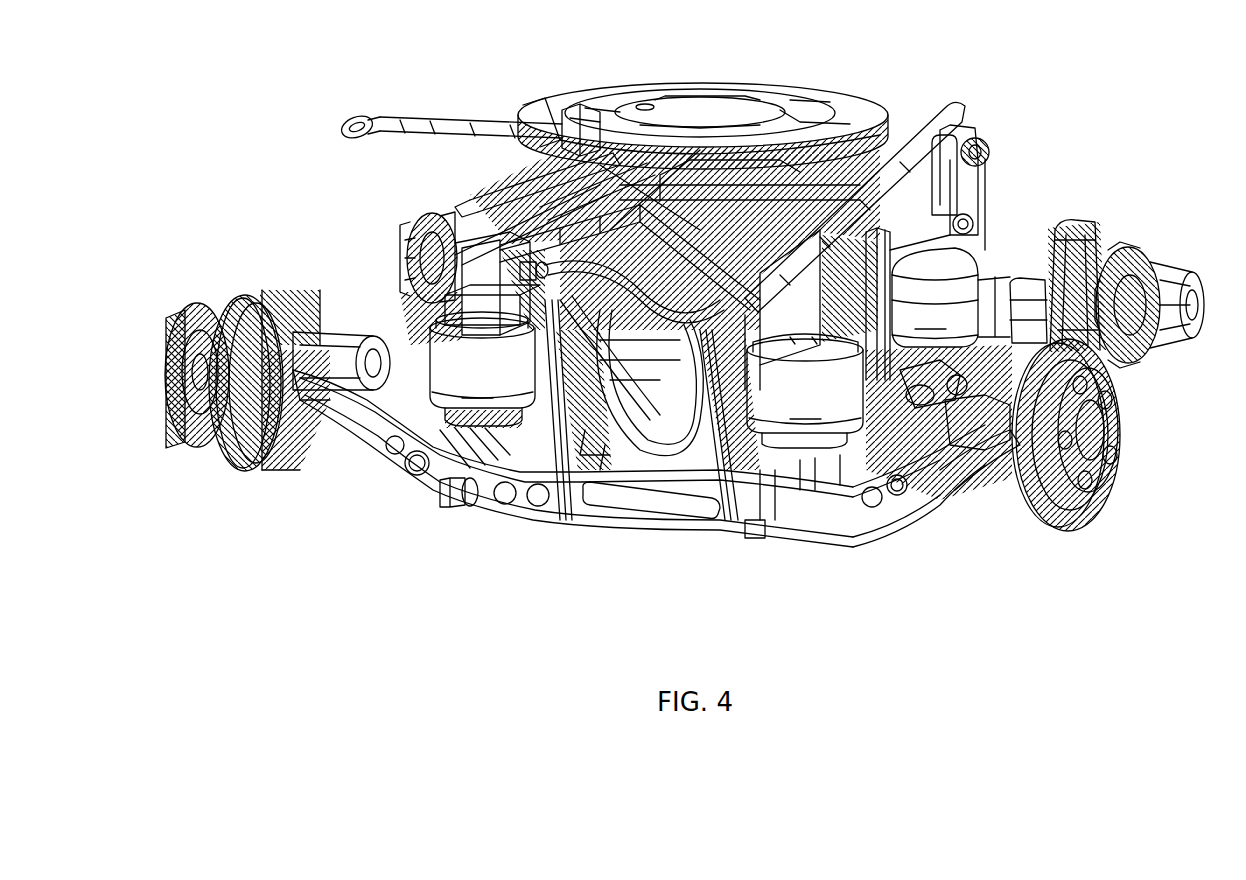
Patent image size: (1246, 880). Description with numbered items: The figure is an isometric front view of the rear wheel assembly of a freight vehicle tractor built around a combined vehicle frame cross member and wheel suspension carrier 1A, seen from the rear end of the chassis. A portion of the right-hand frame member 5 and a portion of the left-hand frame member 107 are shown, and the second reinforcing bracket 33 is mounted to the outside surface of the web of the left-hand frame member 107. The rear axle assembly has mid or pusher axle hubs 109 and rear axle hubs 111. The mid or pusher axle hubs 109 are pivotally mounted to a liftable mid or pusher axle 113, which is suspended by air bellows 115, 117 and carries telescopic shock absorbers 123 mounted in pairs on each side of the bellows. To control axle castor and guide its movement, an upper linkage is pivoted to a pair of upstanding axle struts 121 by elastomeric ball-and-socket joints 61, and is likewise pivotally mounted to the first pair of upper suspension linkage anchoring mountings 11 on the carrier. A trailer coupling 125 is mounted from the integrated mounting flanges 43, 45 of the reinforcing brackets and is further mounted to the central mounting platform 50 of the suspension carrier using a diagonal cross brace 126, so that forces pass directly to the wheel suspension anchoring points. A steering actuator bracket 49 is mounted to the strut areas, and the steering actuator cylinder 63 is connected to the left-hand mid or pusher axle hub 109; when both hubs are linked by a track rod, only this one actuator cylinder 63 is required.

The combined vehicle frame cross member and wheel suspension carrier 1A is at (585, 140).
The right-hand frame member 5 is at (478, 300).
The first pair of upper suspension linkage anchoring mountings 11 is at (521, 168).
The second external reinforcement bracket 33 is at (935, 262).
The integrated mounting flange 43 is at (470, 195).
The integrated mounting flange 45 is at (970, 135).
The steering actuator bracket 49 is at (915, 533).
The central mounting platform 50 is at (720, 108).
The elastomeric ball-and-socket joints 61 is at (540, 268).
The steering actuator cylinder 63 is at (950, 500).
The left-hand frame member 107 is at (942, 120).
The mid or pusher axle hubs 109 is at (186, 440).
The rear axle hubs 111 is at (408, 244).
The liftable mid or pusher axle 113 is at (372, 478).
The air bellows 115 is at (482, 370).
The air bellows 117 is at (897, 348).
The upstanding axle struts 121 is at (655, 430).
The telescopic shock absorbers 123 is at (972, 188).
The trailer coupling 125 is at (661, 100).
The diagonal cross brace 126 is at (775, 125).